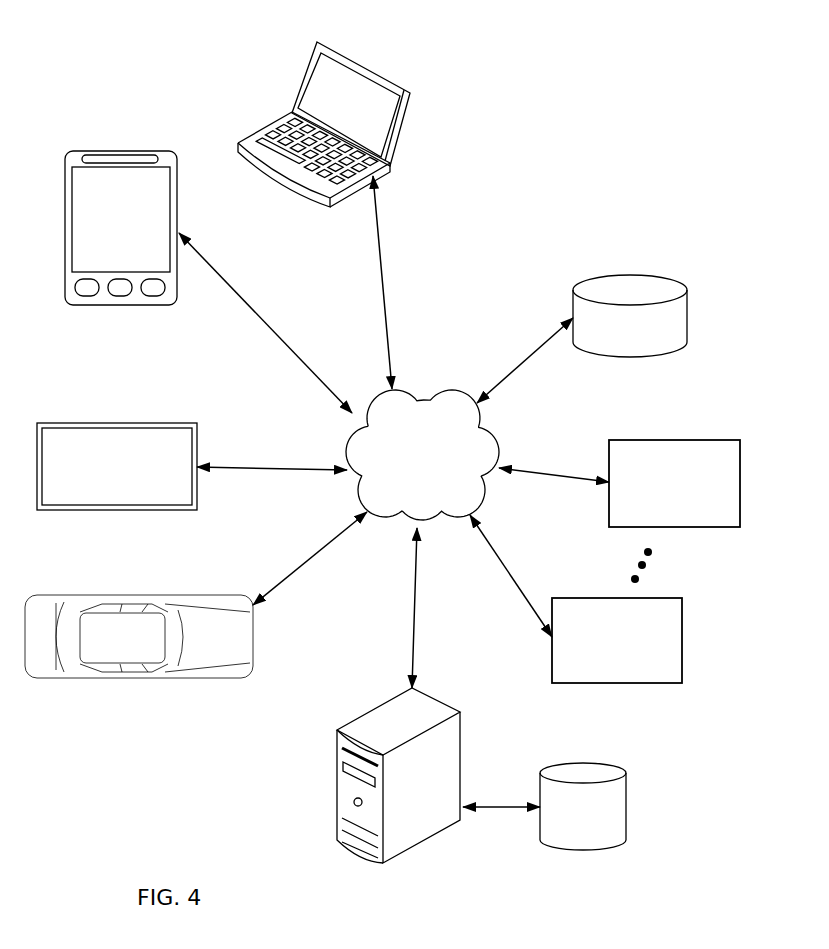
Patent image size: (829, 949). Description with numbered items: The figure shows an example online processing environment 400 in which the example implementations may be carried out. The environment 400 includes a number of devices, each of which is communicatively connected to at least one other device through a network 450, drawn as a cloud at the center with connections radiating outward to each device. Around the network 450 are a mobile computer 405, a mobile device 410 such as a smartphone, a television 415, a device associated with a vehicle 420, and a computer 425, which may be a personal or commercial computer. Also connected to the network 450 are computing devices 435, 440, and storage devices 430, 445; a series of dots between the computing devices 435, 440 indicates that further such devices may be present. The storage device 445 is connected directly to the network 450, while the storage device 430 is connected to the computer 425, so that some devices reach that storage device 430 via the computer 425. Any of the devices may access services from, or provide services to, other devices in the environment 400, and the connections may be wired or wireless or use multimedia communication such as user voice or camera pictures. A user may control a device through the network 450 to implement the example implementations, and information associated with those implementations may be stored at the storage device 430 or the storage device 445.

The environment 400 is at (133, 35).
The mobile computer 405 is at (324, 124).
The mobile device 410 is at (121, 228).
The television 415 is at (117, 466).
The device associated with a vehicle 420 is at (139, 636).
The computer 425 is at (398, 775).
The storage device 430 is at (583, 806).
The computing device 435 is at (617, 640).
The computing device 440 is at (674, 483).
The storage device 445 is at (630, 316).
The network 450 is at (422, 455).